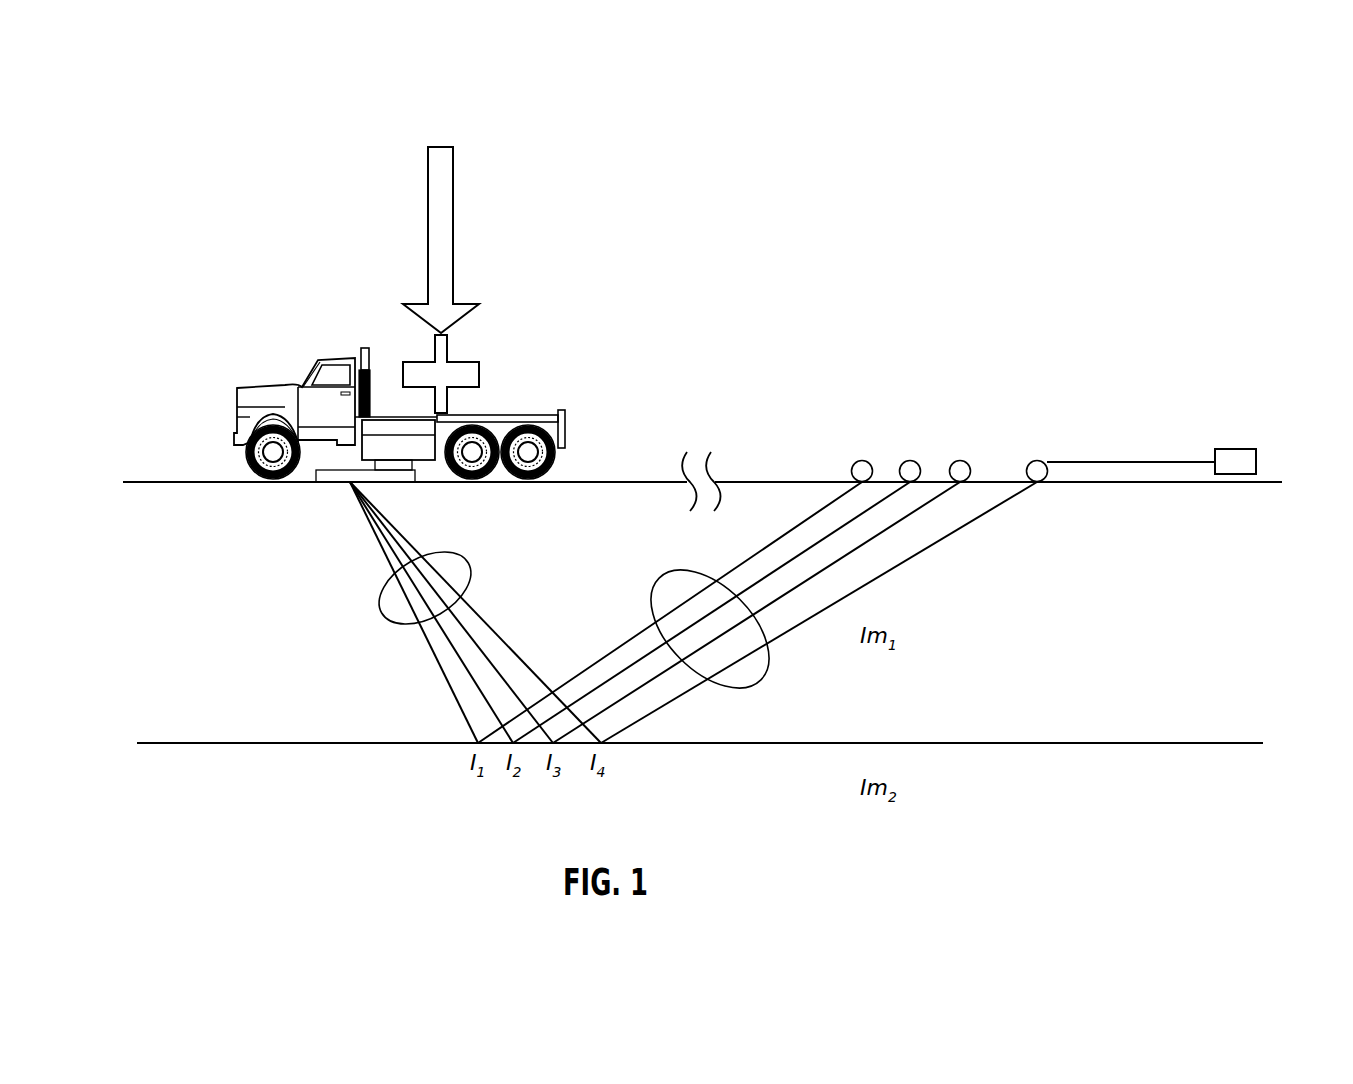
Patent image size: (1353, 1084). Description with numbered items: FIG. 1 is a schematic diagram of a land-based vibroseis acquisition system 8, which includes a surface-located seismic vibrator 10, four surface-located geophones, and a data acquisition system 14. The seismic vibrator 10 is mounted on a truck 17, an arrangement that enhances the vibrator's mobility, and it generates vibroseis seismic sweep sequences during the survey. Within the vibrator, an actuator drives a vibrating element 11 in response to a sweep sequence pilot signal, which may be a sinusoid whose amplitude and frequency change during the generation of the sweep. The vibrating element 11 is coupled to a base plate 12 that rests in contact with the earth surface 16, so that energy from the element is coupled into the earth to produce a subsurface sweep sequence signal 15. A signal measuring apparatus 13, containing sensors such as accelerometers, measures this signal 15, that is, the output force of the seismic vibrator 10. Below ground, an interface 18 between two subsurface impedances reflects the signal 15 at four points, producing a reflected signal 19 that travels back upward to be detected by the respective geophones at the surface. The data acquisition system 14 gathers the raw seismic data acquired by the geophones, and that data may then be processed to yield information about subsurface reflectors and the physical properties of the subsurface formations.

The vibroseis acquisition system 8 is at (1001, 377).
The seismic vibrator 10 is at (205, 336).
The vibrating element 11 is at (479, 262).
The base plate 12 is at (329, 504).
The signal measuring apparatus 13 is at (433, 503).
The data acquisition system 14 is at (1260, 444).
The subsurface sweep sequence signal 15 is at (451, 612).
The earth surface 16 is at (697, 469).
The truck 17 is at (302, 373).
The interface 18 is at (700, 723).
The reflected signal 19 is at (757, 612).